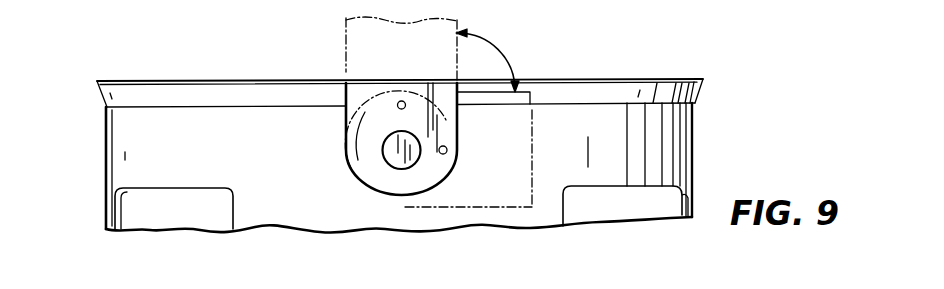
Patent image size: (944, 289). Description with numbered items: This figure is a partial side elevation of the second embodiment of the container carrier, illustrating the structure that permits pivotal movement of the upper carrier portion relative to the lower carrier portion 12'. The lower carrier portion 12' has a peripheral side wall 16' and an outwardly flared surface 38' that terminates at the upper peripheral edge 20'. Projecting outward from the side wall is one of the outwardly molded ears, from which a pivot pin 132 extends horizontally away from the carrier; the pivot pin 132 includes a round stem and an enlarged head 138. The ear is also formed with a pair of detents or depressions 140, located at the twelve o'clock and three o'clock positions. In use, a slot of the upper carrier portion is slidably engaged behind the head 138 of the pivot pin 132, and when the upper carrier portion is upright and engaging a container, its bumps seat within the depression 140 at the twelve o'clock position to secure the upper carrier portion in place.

The lower carrier portion 12' is at (366, 170).
The upper peripheral edge 20' is at (400, 61).
The outwardly flared surface 38' is at (400, 79).
The peripheral side wall 16' is at (691, 160).
The enlarged head 138 is at (426, 183).
The pivot pin 132 is at (387, 166).
The detents or depressions 140 is at (402, 100).